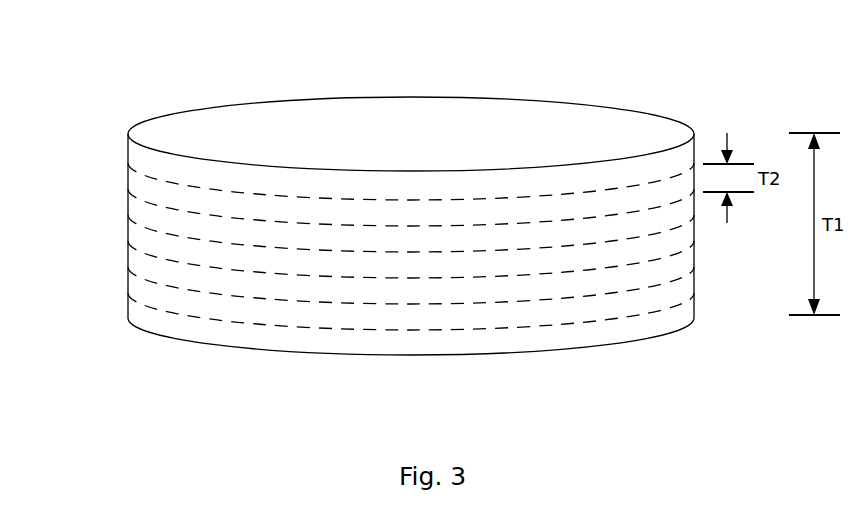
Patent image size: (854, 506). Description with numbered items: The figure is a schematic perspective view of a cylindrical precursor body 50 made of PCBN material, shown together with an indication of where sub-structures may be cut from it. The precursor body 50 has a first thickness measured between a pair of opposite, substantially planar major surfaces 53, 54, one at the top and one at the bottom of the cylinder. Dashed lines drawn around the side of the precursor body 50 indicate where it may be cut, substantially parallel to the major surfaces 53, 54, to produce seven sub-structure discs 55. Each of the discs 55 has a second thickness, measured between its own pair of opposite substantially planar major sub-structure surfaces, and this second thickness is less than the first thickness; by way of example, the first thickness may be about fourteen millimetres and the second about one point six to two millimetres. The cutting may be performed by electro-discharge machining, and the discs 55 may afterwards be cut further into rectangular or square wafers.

The cylindrical precursor body 50 is at (118, 79).
The major surface 53 is at (452, 78).
The major surface 54 is at (453, 385).
The sub-structure discs 55 is at (130, 152).